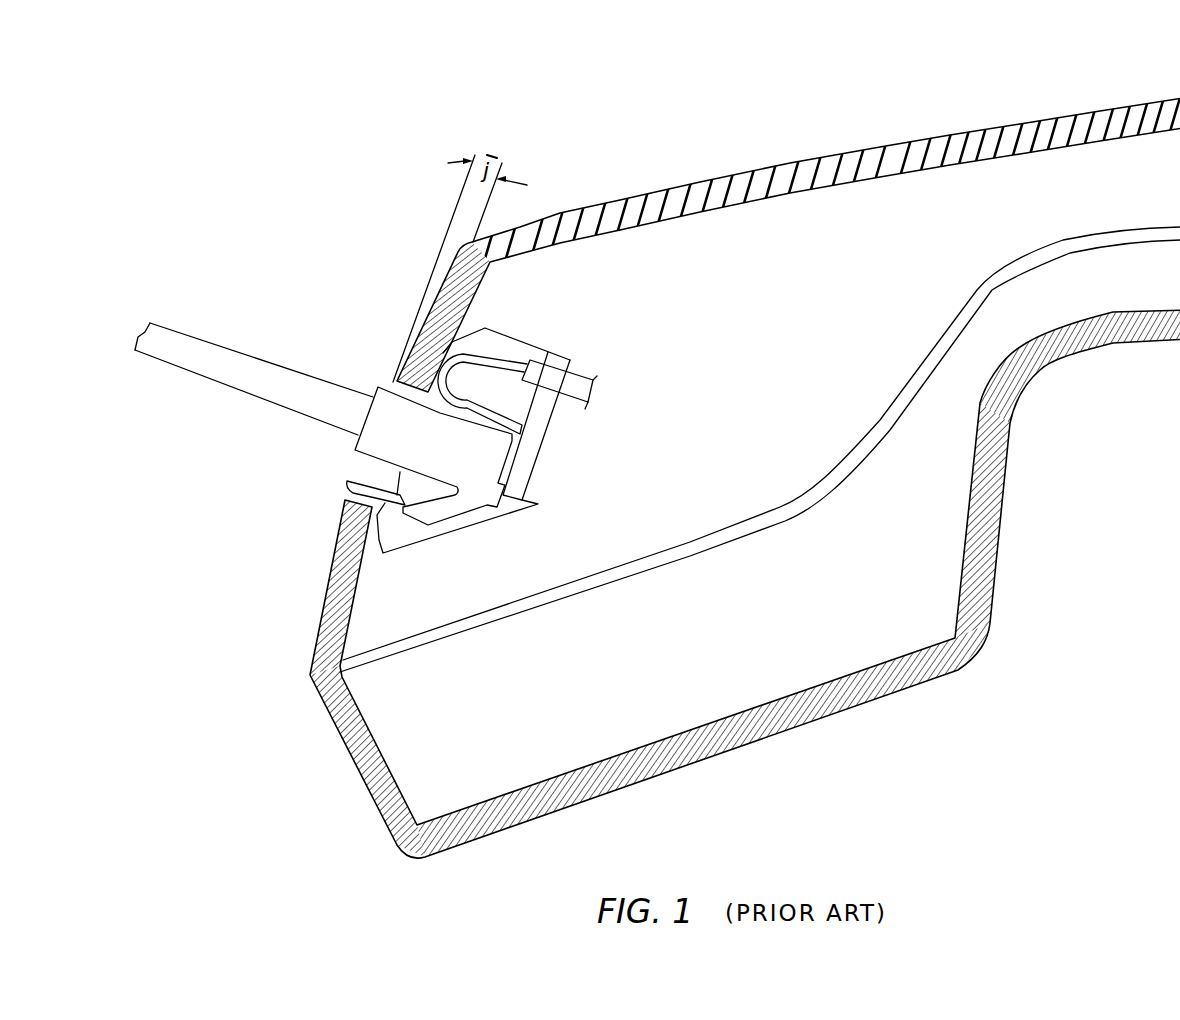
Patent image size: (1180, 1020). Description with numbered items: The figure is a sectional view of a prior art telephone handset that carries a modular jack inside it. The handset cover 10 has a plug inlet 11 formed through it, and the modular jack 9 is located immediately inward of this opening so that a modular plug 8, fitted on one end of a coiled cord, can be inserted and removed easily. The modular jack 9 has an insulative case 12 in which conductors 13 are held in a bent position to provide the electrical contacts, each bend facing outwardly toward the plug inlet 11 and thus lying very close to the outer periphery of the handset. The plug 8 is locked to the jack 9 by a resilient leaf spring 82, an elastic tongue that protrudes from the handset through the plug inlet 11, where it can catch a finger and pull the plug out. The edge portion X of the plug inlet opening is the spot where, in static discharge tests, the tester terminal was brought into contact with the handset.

The modular plug 8 is at (353, 437).
The resilient leaf spring 82 is at (347, 488).
The modular jack 9 is at (556, 352).
The handset cover 10 is at (910, 138).
The plug inlet 11 is at (347, 503).
The insulative case 12 is at (557, 422).
The conductors 13 is at (537, 437).
The edge portion of the plug inlet opening X is at (381, 373).